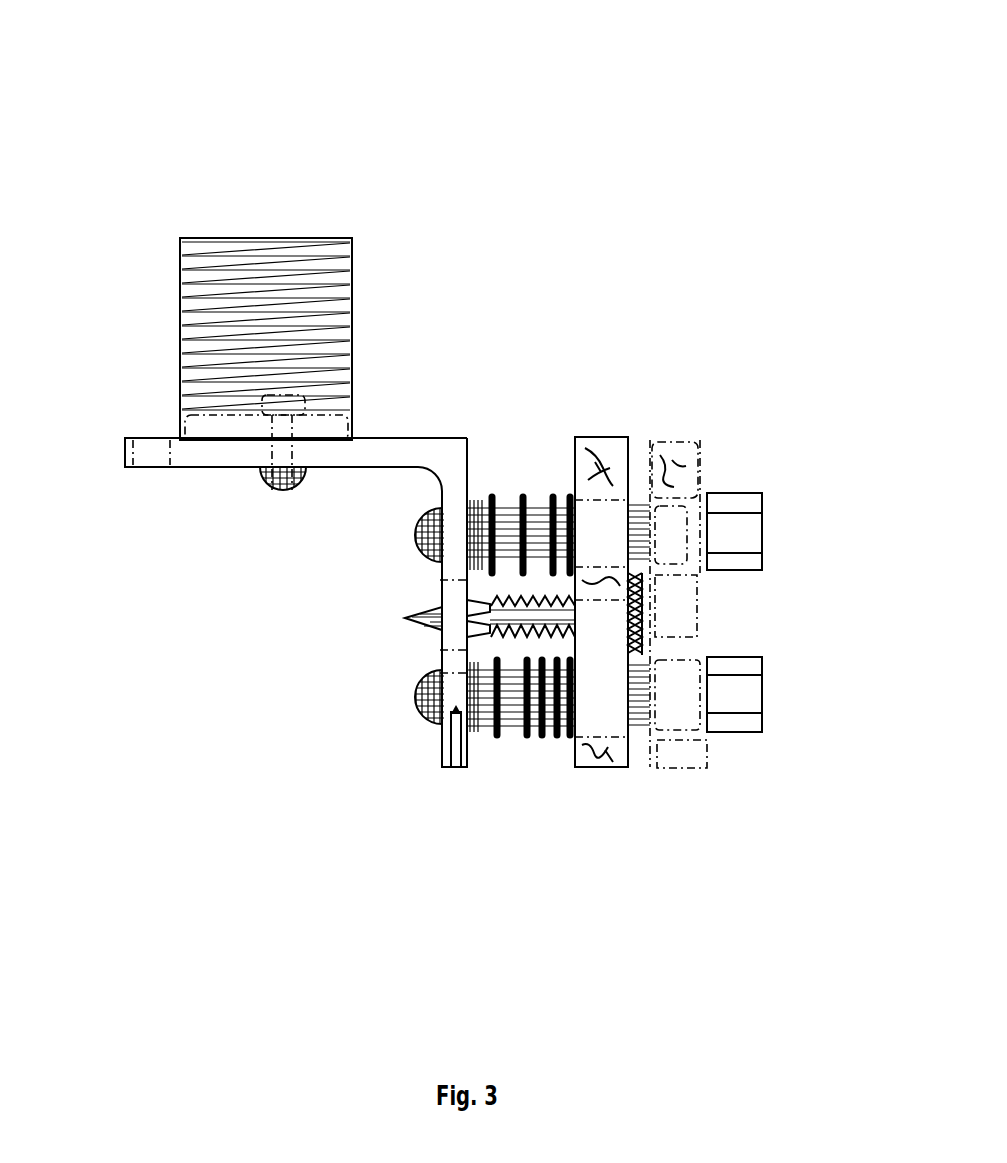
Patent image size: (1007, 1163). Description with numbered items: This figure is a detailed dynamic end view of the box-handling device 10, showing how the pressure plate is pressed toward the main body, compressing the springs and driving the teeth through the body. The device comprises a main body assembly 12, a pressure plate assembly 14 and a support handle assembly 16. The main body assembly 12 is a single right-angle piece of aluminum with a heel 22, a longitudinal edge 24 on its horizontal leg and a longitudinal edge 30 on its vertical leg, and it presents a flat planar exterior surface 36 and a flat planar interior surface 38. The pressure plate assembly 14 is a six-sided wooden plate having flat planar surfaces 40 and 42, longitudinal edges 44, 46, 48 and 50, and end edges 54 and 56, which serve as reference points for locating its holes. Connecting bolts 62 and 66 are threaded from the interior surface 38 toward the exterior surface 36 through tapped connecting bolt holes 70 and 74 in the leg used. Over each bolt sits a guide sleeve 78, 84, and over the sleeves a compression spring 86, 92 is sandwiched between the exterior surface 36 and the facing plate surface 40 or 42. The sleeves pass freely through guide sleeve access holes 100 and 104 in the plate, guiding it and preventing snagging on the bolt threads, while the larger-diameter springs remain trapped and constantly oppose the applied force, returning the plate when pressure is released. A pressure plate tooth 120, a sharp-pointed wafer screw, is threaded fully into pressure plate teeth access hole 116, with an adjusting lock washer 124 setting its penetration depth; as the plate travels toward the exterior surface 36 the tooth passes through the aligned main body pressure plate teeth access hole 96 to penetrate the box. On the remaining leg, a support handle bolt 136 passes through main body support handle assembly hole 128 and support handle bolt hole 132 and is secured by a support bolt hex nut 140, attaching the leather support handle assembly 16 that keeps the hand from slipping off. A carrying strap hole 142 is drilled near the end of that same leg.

The present invention 10 is at (210, 67).
The main body assembly 12 is at (493, 236).
The pressure plate assembly 14 is at (655, 238).
The support handle assembly 16 is at (155, 200).
The heel 22 is at (463, 440).
The longitudinal edge 24 is at (125, 453).
The longitudinal edge 30 is at (455, 767).
The flat planar exterior surface 36 is at (402, 438).
The flat planar interior surface 38 is at (182, 465).
The pressure plate flat planar surface 40 is at (648, 745).
The pressure plate flat planar surface 42 is at (575, 745).
The pressure plate longitudinal edge 44 is at (632, 745).
The pressure plate longitudinal edge 46 is at (627, 437).
The pressure plate longitudinal edge 48 is at (575, 440).
The pressure plate longitudinal edge 50 is at (577, 765).
The pressure plate end edge 54 is at (625, 450).
The pressure plate end edge 56 is at (557, 440).
The connecting bolt 62 is at (410, 530).
The connecting bolt 66 is at (417, 705).
The connecting bolt hole 70 is at (460, 542).
The connecting bolt hole 74 is at (452, 757).
The guide sleeve 78 is at (478, 495).
The guide sleeve 84 is at (648, 703).
The compression spring 86 is at (523, 495).
The compression spring 92 is at (495, 740).
The main body assembly pressure plate teeth access hole 96 is at (453, 630).
The guide sleeve access hole 100 is at (607, 497).
The guide sleeve access hole 104 is at (607, 740).
The pressure plate teeth access hole 116 is at (690, 590).
The pressure plate tooth 120 is at (667, 635).
The adjusting lock washer 124 is at (643, 653).
The main body support handle assembly hole 128 is at (275, 455).
The support handle bolt hole 132 is at (270, 456).
The support handle bolt 136 is at (275, 493).
The support bolt hex nut 140 is at (285, 383).
The carrying strap hole 142 is at (150, 438).